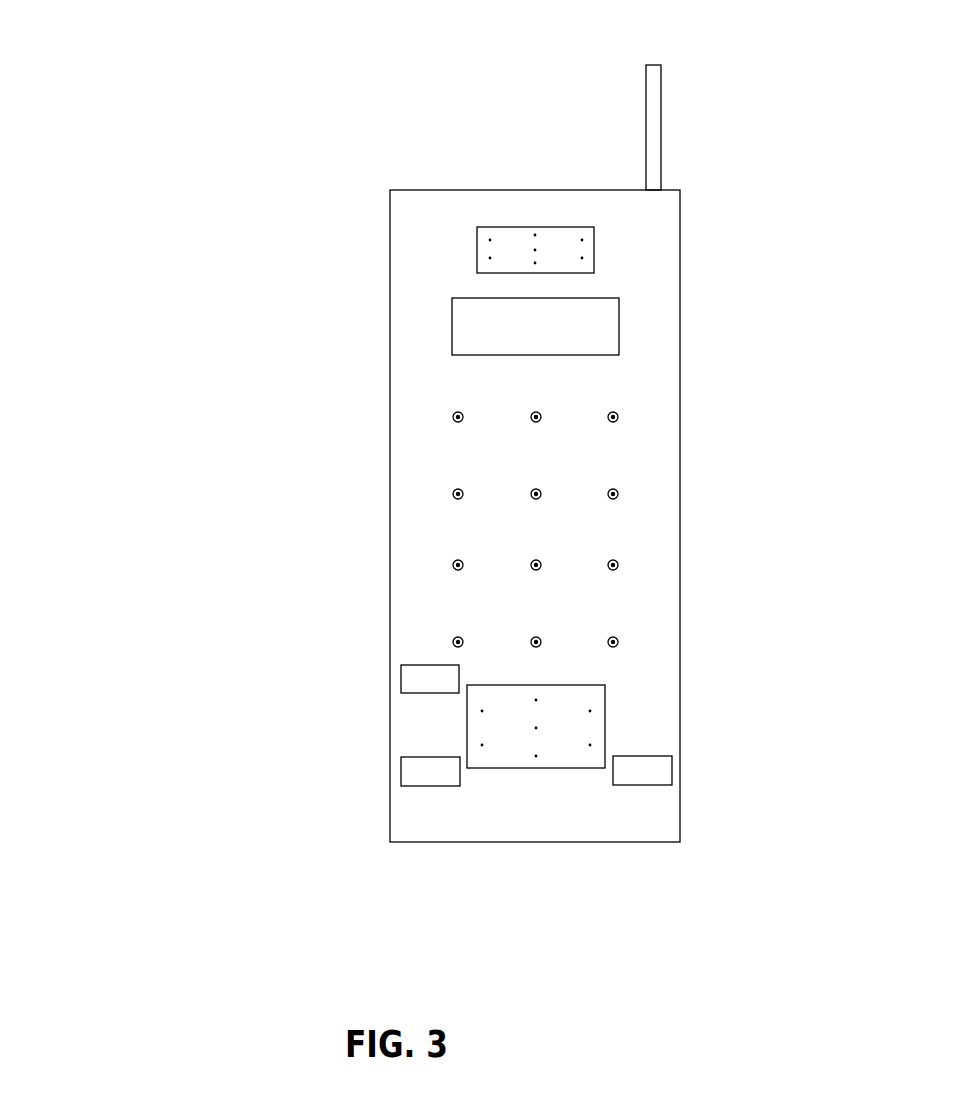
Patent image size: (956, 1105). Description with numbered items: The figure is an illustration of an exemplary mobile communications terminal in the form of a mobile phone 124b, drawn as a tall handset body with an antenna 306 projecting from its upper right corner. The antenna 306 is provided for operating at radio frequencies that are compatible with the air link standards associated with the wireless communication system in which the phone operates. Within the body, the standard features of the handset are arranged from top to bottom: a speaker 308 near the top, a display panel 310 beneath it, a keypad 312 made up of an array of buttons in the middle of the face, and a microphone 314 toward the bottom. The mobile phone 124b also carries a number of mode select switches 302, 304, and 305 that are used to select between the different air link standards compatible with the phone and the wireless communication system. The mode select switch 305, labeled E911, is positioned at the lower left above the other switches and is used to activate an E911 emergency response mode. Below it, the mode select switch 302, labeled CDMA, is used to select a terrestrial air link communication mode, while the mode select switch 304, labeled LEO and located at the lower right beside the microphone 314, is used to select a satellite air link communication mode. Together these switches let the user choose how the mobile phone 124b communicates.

The mobile phone 124b is at (275, 115).
The antenna 306 is at (661, 93).
The speaker 308 is at (594, 248).
The display panel 310 is at (619, 333).
The keypad 312 is at (642, 488).
The microphone 314 is at (605, 719).
The mode select switch 305 is at (400, 675).
The mode select switch 302 is at (400, 768).
The mode select switch 304 is at (672, 766).